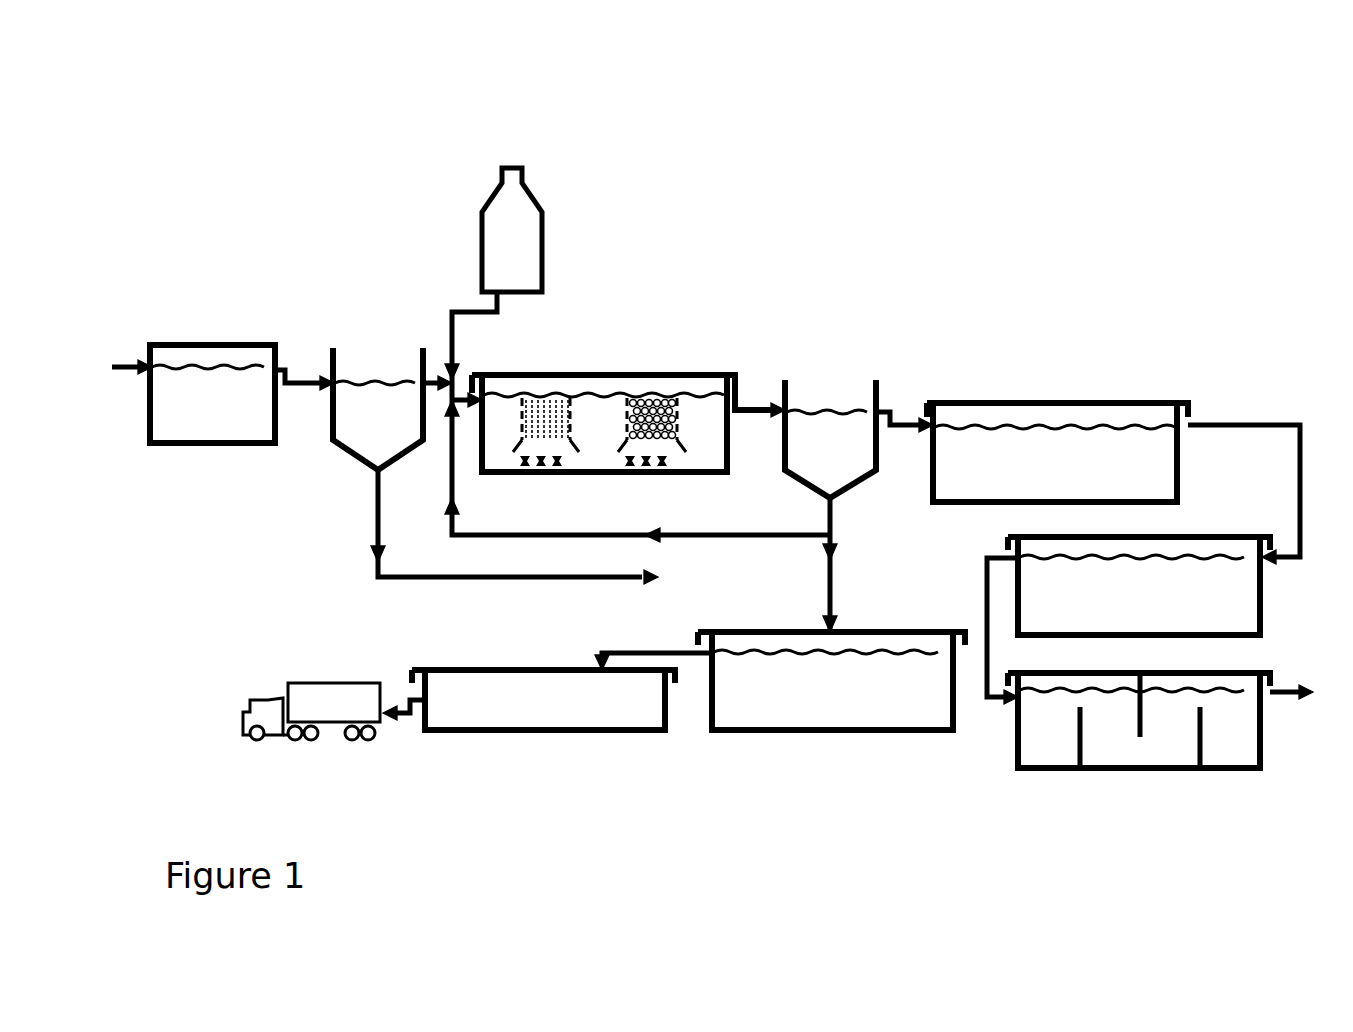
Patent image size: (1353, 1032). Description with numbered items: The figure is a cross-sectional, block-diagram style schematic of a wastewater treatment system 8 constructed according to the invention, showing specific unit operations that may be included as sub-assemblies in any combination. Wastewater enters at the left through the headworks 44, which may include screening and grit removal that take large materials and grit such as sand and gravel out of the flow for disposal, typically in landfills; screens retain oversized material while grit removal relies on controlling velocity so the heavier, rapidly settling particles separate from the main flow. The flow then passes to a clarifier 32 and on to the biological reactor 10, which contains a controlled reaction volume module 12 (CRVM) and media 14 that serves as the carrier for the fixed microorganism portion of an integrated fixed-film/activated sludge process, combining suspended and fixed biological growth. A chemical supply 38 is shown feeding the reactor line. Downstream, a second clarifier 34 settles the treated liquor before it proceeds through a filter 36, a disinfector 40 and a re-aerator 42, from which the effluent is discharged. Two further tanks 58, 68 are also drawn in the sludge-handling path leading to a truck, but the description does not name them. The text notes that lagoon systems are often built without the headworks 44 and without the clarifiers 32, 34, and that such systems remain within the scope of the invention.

The wastewater treatment system 8 is at (560, 128).
The biological reactor 10 is at (543, 375).
The controlled reaction volume module 12 is at (630, 457).
The media 14 is at (657, 427).
The clarifier 32 is at (495, 466).
The second clarifier 34 is at (859, 506).
The filter 36 is at (1113, 483).
The chemical supply 38 is at (637, 355).
The disinfector 40 is at (1128, 620).
The re-aerator 42 is at (1160, 720).
The headworks 44 is at (242, 394).
The sludge holding tank 58 is at (780, 681).
The sludge dewatering unit 68 is at (529, 700).